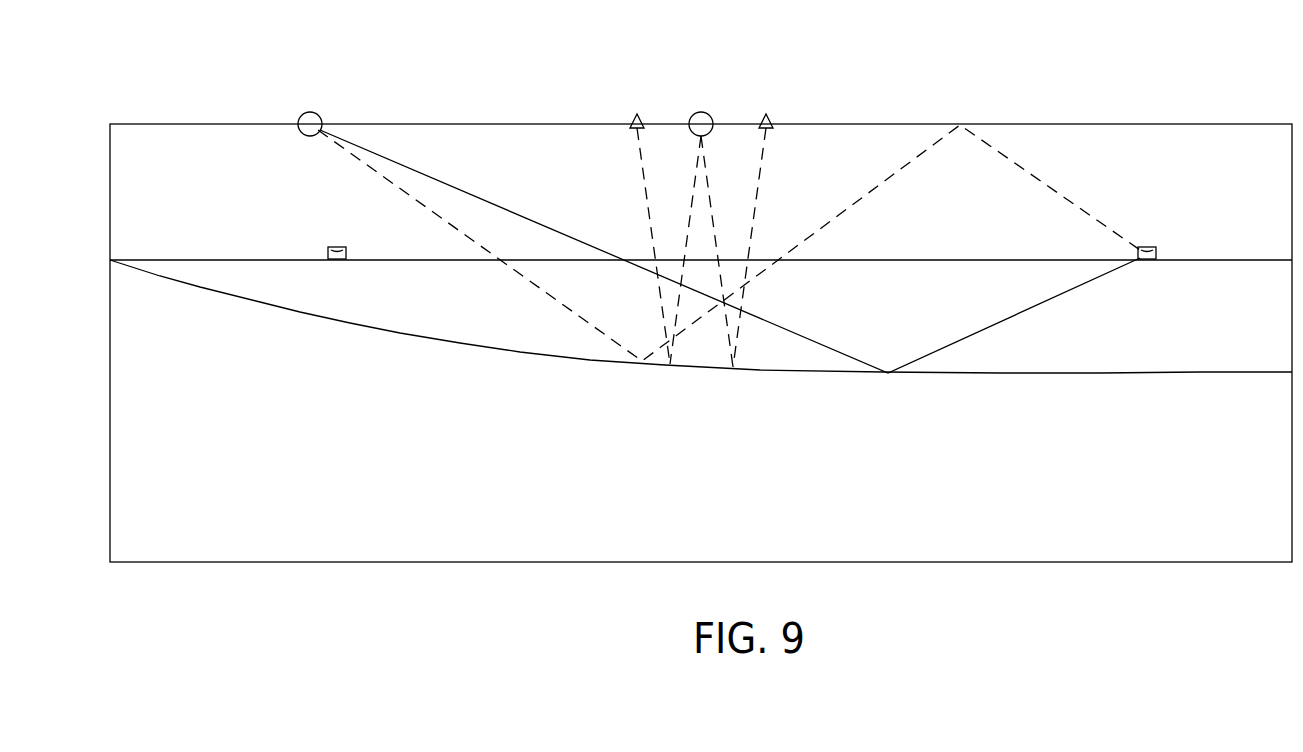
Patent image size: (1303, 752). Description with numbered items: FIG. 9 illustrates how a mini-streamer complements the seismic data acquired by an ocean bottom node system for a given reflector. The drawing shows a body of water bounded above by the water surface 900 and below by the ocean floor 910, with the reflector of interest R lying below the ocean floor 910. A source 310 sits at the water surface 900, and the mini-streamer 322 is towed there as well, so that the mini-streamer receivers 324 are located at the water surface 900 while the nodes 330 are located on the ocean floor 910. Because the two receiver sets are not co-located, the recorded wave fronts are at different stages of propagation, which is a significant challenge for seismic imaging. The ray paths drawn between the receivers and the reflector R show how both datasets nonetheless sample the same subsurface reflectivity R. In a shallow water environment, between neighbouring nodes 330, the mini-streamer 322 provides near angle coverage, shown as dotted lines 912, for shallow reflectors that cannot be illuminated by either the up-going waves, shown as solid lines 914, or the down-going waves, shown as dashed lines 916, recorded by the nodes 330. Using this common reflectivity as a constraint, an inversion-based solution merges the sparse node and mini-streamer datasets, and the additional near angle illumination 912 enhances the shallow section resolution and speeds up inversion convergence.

The water surface 900 is at (1183, 124).
The ocean floor 910 is at (1230, 258).
The reflector of interest R is at (445, 345).
The nodes 330 is at (337, 260).
The sources 310 is at (299, 102).
The mini-streamer 322 is at (843, 103).
The mini-streamer receivers 324 is at (635, 112).
The near angle coverage 912 is at (641, 163).
The down-going waves 916 is at (1013, 160).
The up-going waves 914 is at (1018, 316).